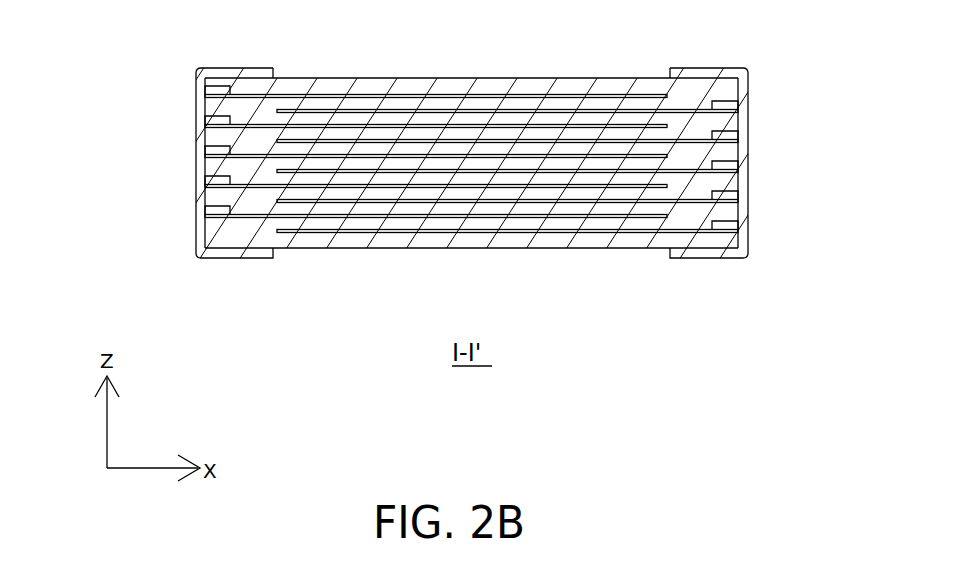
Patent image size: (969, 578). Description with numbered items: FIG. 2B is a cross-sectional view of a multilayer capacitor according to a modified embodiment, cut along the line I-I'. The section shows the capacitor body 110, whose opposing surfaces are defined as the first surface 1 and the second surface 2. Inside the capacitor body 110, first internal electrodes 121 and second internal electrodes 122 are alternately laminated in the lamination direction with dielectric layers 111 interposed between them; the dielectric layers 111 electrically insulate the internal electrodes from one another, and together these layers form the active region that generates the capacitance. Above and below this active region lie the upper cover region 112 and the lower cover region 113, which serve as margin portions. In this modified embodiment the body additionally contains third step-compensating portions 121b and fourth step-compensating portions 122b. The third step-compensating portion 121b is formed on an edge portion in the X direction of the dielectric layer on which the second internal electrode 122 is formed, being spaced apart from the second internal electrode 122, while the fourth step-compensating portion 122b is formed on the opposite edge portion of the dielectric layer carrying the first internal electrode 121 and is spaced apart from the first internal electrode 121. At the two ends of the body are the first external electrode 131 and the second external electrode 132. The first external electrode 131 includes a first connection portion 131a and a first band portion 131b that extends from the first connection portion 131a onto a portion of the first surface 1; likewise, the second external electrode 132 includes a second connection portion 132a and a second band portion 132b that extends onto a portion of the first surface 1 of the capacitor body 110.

The first surface 1 is at (408, 249).
The second surface 2 is at (462, 155).
The capacitor body 110 is at (462, 155).
The dielectric layer 111 is at (665, 162).
The upper cover region 112 is at (342, 85).
The lower cover region 113 is at (610, 248).
The first internal electrode 121 is at (389, 148).
The third step-compensating portion 121b is at (201, 89).
The second internal electrode 122 is at (548, 131).
The fourth step-compensating portion 122b is at (738, 104).
The first external electrode 131 is at (152, 185).
The first connection portion 131a is at (200, 217).
The first band portion 131b is at (238, 260).
The second external electrode 132 is at (793, 185).
The second connection portion 132a is at (740, 208).
The second band portion 132b is at (715, 260).